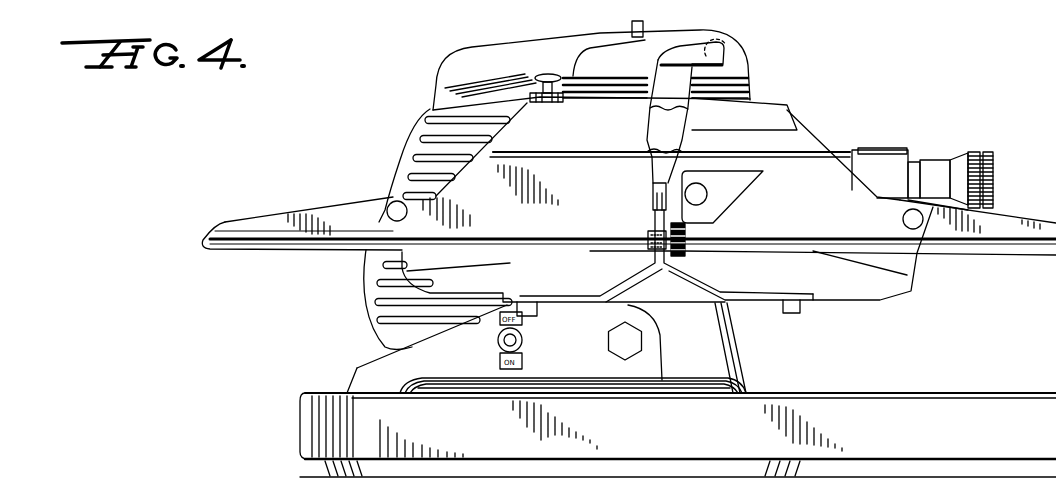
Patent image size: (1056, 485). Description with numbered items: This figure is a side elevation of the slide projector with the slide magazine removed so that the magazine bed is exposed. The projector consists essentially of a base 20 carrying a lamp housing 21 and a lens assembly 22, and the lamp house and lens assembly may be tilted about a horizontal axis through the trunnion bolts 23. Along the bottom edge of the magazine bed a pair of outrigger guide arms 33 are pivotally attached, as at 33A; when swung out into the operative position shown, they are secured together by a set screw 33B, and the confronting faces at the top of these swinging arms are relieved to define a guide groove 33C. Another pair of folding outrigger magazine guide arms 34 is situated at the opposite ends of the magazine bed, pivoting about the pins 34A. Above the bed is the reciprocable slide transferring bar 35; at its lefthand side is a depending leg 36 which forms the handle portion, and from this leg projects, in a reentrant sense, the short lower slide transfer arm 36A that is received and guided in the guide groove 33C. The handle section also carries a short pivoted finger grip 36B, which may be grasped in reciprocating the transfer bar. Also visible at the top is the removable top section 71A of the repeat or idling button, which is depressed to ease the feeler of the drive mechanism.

The base 20 is at (740, 356).
The lamp housing 21 is at (487, 44).
The lens assembly 22 is at (851, 146).
The trunnion bolts 23 is at (645, 340).
The outrigger guide arms 33 is at (612, 291).
The pivotal attachment 33A is at (532, 316).
The set screw 33B is at (686, 248).
The guide groove 33C is at (723, 202).
The folding outrigger magazine guide arms 34 is at (291, 246).
The pivot pin 34A is at (390, 204).
The reciprocable slide transferring bar 35 is at (728, 44).
The depending leg 36 is at (622, 71).
The slide transfer arm 36A is at (655, 200).
The pivoted finger grip 36B is at (672, 90).
The removable top section 71A is at (646, 26).